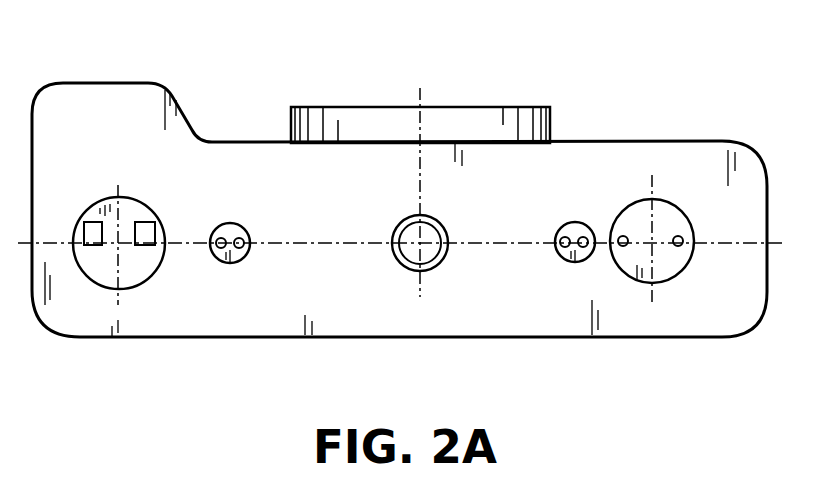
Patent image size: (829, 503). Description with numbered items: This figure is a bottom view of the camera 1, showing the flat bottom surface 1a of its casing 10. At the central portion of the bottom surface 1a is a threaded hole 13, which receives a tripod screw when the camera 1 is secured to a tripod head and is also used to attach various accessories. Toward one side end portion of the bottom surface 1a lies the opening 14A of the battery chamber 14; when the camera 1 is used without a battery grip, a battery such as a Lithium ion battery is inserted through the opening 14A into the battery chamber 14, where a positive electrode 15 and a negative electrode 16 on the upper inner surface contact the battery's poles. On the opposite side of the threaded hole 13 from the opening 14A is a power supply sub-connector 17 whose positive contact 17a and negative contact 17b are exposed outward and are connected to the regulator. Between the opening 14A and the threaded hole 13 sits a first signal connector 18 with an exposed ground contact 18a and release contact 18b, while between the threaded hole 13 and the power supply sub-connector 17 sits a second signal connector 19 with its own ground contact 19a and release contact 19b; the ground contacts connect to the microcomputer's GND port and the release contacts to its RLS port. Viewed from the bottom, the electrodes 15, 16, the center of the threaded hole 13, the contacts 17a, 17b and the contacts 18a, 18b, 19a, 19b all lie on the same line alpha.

The camera 1 is at (646, 83).
The bottom surface 1a is at (378, 194).
The casing 10 is at (178, 106).
The threaded hole 13 is at (413, 266).
The battery chamber 14 is at (80, 268).
The opening 14A is at (119, 265).
The positive electrode 15 is at (86, 225).
The negative electrode 16 is at (146, 230).
The power supply sub-connector 17 is at (665, 213).
The positive contact 17a is at (683, 247).
The negative contact 17b is at (622, 247).
The first signal connector 18 is at (228, 226).
The ground contact 18a is at (222, 249).
The release contact 18b is at (241, 249).
The second signal connector 19 is at (575, 225).
The ground contact 19a is at (567, 250).
The release contact 19b is at (560, 235).
The line α alpha is at (358, 246).